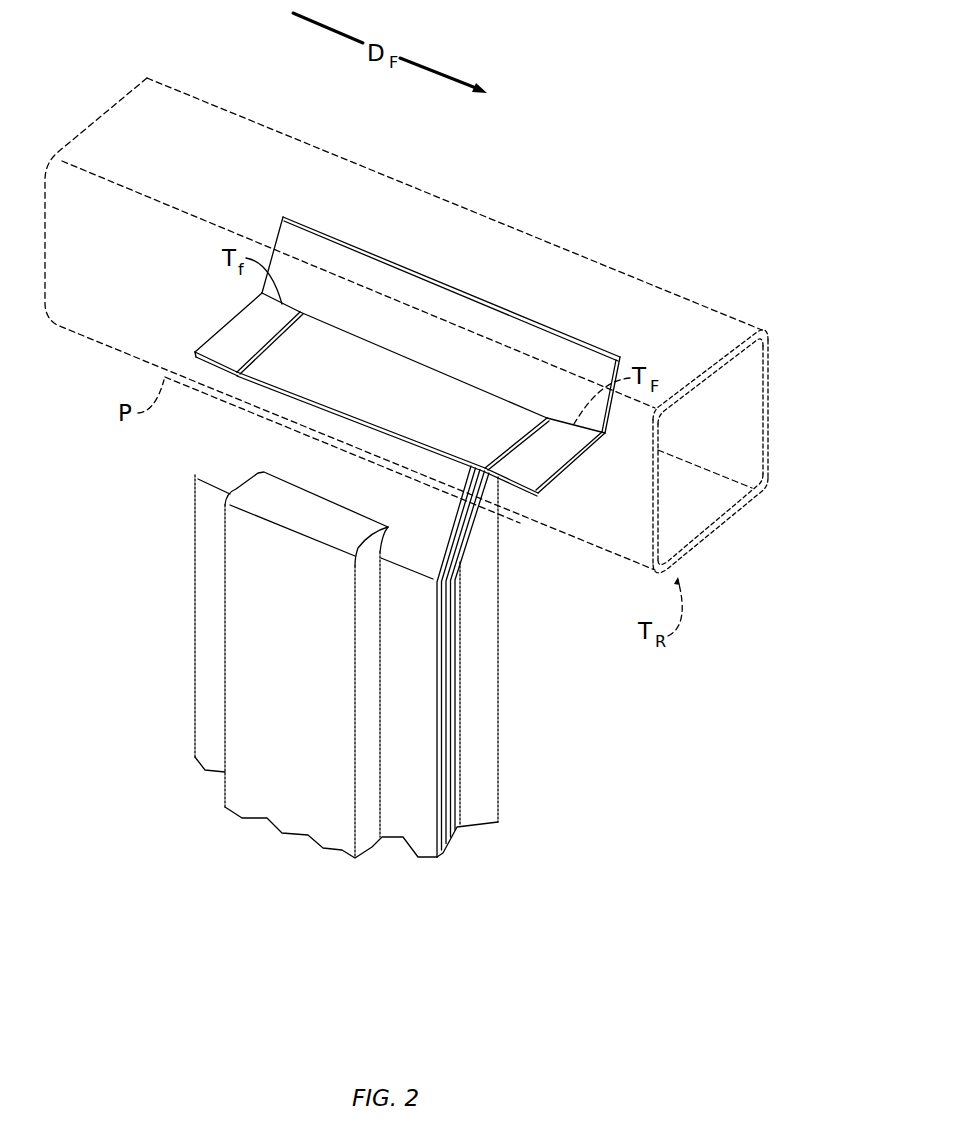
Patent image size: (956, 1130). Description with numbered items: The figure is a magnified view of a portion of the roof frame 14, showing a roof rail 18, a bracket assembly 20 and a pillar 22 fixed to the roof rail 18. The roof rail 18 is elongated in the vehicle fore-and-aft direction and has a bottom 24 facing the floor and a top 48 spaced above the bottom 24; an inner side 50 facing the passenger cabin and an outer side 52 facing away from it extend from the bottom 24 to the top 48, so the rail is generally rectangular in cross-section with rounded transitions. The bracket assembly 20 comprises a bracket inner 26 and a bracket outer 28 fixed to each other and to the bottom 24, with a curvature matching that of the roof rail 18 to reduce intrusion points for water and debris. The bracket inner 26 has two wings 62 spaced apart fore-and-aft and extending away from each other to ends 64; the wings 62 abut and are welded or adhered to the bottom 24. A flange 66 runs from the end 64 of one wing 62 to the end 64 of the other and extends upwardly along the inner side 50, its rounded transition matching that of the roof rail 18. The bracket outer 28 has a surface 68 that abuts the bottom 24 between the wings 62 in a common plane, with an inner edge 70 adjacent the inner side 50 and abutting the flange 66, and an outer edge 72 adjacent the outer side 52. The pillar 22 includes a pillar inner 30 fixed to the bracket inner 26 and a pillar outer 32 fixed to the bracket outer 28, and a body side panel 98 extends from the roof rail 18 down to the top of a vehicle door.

The roof frame 14 is at (536, 134).
The roof rail 18 is at (549, 238).
The bracket assembly 20 is at (427, 226).
The pillar 22 is at (155, 626).
The bottom 24 is at (708, 553).
The bracket inner 26 is at (346, 238).
The bracket outer 28 is at (489, 394).
The pillar inner 30 is at (456, 704).
The pillar outer 32 is at (446, 755).
The top 48 is at (690, 382).
The inner side 50 is at (768, 375).
The outer side 52 is at (652, 528).
The wings 62 is at (221, 323).
The ends 64 is at (196, 347).
The flange 66 is at (484, 300).
The surface 68 is at (390, 398).
The inner edge 70 is at (372, 340).
The outer edge 72 is at (285, 392).
The body side panel 98 is at (436, 793).